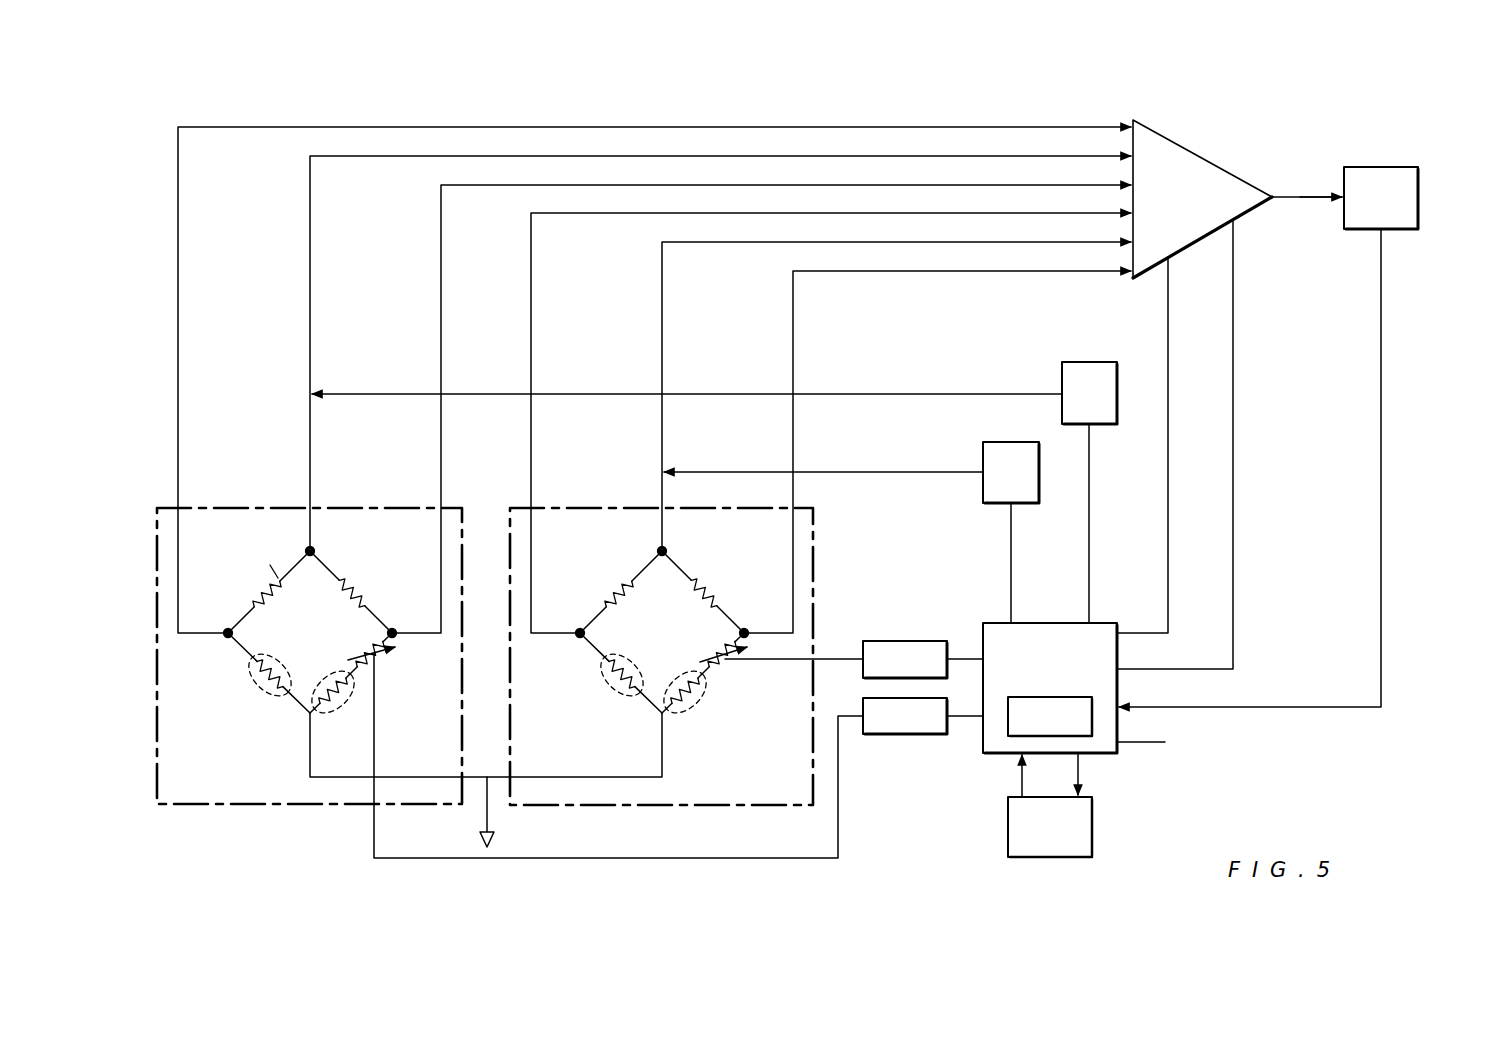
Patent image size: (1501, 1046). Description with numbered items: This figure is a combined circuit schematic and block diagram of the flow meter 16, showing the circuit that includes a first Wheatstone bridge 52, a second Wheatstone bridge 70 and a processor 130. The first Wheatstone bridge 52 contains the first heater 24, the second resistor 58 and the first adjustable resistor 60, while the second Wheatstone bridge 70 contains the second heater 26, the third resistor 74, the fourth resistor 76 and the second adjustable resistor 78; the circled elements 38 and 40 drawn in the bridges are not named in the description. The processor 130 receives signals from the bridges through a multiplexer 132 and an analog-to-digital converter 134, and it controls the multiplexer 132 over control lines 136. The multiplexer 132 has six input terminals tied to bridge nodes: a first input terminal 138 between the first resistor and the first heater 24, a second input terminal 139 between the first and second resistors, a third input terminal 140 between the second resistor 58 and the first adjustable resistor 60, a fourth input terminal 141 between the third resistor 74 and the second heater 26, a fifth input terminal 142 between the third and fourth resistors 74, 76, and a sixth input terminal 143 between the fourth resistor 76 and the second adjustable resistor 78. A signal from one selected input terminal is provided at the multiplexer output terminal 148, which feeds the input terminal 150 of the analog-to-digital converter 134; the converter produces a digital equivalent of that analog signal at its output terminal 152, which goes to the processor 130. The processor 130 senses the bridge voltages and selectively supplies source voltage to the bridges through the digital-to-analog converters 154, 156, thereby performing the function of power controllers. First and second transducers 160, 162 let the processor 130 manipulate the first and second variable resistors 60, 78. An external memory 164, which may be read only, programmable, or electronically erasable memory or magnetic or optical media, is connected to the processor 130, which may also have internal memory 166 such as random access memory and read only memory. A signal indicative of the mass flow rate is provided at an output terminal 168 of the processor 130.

The flow meter 16 is at (1302, 104).
The first heater 24 is at (282, 648).
The second heater 26 is at (634, 650).
The ambient temperature resistor Ra1 38 is at (332, 678).
The ambient temperature resistor Ra2 40 is at (684, 678).
The first Wheatstone bridge 52 is at (309, 638).
The second resistor 58 is at (343, 596).
The first adjustable resistor 60 is at (374, 645).
The second Wheatstone bridge 70 is at (661, 638).
The third resistor 74 is at (636, 578).
The fourth resistor 76 is at (695, 596).
The second adjustable resistor 78 is at (726, 645).
The processor 130 is at (1104, 622).
The multiplexer 132 is at (1172, 144).
The analog-to-digital converter 134 is at (1371, 166).
The control lines 136 is at (1232, 364).
The first input terminal 138 is at (1129, 125).
The second input terminal 139 is at (1129, 154).
The third input terminal 140 is at (1129, 183).
The fourth input terminal 141 is at (1129, 212).
The fifth input terminal 142 is at (1129, 241).
The sixth input terminal 143 is at (1129, 270).
The output terminal 148 is at (1273, 193).
The input terminal 150 is at (1340, 205).
The output terminal 152 is at (1383, 238).
The digital-to-analog converter 154 is at (1060, 370).
The digital-to-analog converter 156 is at (981, 450).
The first transducer 160 is at (910, 640).
The second transducer 162 is at (878, 737).
The external memory 164 is at (1054, 858).
The internal memory 166 is at (1041, 696).
The output terminal 168 is at (1119, 748).